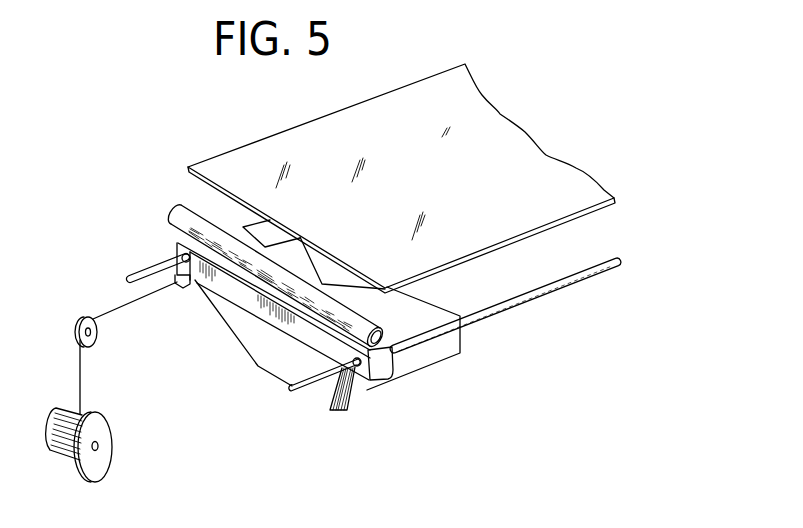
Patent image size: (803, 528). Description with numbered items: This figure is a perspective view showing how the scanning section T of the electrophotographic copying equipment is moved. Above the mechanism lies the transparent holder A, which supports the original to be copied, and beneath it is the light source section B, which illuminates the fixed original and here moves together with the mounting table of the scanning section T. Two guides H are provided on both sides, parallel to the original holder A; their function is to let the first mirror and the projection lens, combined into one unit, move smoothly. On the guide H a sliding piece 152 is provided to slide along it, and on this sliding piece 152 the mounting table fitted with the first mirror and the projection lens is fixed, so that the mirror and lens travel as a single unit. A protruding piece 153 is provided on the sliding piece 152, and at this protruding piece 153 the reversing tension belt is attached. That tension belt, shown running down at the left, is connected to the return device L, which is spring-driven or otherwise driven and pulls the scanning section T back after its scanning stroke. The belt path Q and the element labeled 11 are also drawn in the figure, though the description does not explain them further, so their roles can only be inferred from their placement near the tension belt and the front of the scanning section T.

The transparent holder A is at (417, 80).
The light source section B is at (382, 334).
The guide H is at (141, 271).
The scanning section T is at (446, 341).
The protruding piece 153 is at (184, 288).
The sliding piece 152 is at (377, 367).
The front bracket with rod 11 is at (327, 397).
The belt Q is at (82, 372).
The return device L is at (109, 448).